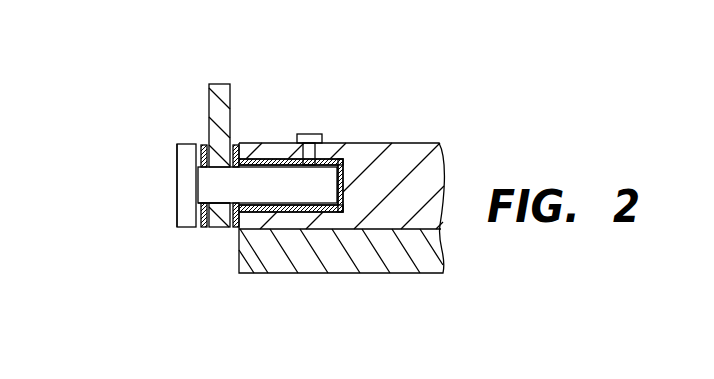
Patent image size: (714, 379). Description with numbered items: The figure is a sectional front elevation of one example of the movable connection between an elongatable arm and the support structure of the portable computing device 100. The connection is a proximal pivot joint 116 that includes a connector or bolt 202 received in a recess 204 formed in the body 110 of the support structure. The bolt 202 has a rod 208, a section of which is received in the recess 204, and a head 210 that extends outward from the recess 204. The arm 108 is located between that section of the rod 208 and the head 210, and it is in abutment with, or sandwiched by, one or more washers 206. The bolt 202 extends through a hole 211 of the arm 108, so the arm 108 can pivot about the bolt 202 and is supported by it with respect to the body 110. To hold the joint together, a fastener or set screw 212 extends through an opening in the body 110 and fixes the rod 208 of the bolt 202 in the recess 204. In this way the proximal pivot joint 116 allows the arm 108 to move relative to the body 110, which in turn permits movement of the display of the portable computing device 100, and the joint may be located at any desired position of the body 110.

The portable computing device 100 is at (516, 48).
The body 110 is at (407, 170).
The recess 204 is at (276, 158).
The set screw 212 is at (308, 133).
The bolt 202 is at (210, 178).
The hole 211 is at (218, 200).
The arm 108 is at (209, 102).
The head 210 is at (185, 162).
The proximal pivot joint 116 is at (170, 167).
The washers 206 is at (204, 227).
The rod 208 is at (248, 185).